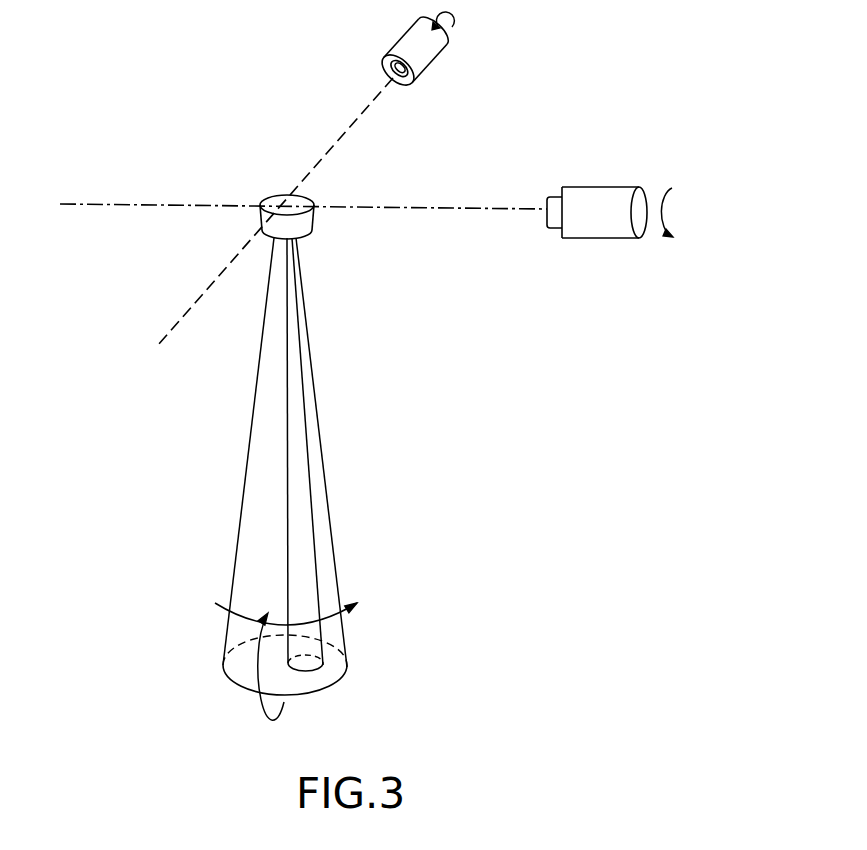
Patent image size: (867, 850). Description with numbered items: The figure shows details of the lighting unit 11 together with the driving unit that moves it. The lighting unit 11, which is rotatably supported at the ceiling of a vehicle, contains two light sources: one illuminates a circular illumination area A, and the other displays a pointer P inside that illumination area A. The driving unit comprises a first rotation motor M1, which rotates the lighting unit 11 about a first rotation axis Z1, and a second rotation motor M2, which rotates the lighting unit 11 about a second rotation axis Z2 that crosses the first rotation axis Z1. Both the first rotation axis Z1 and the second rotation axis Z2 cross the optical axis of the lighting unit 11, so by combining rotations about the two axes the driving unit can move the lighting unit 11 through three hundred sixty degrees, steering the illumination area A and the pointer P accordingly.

The lighting unit 11 is at (307, 197).
The first rotation motor M1 is at (604, 187).
The second rotation motor M2 is at (432, 64).
The first rotation axis Z1 is at (467, 208).
The second rotation axis Z2 is at (347, 128).
The pointer P is at (324, 667).
The illumination area A is at (328, 685).